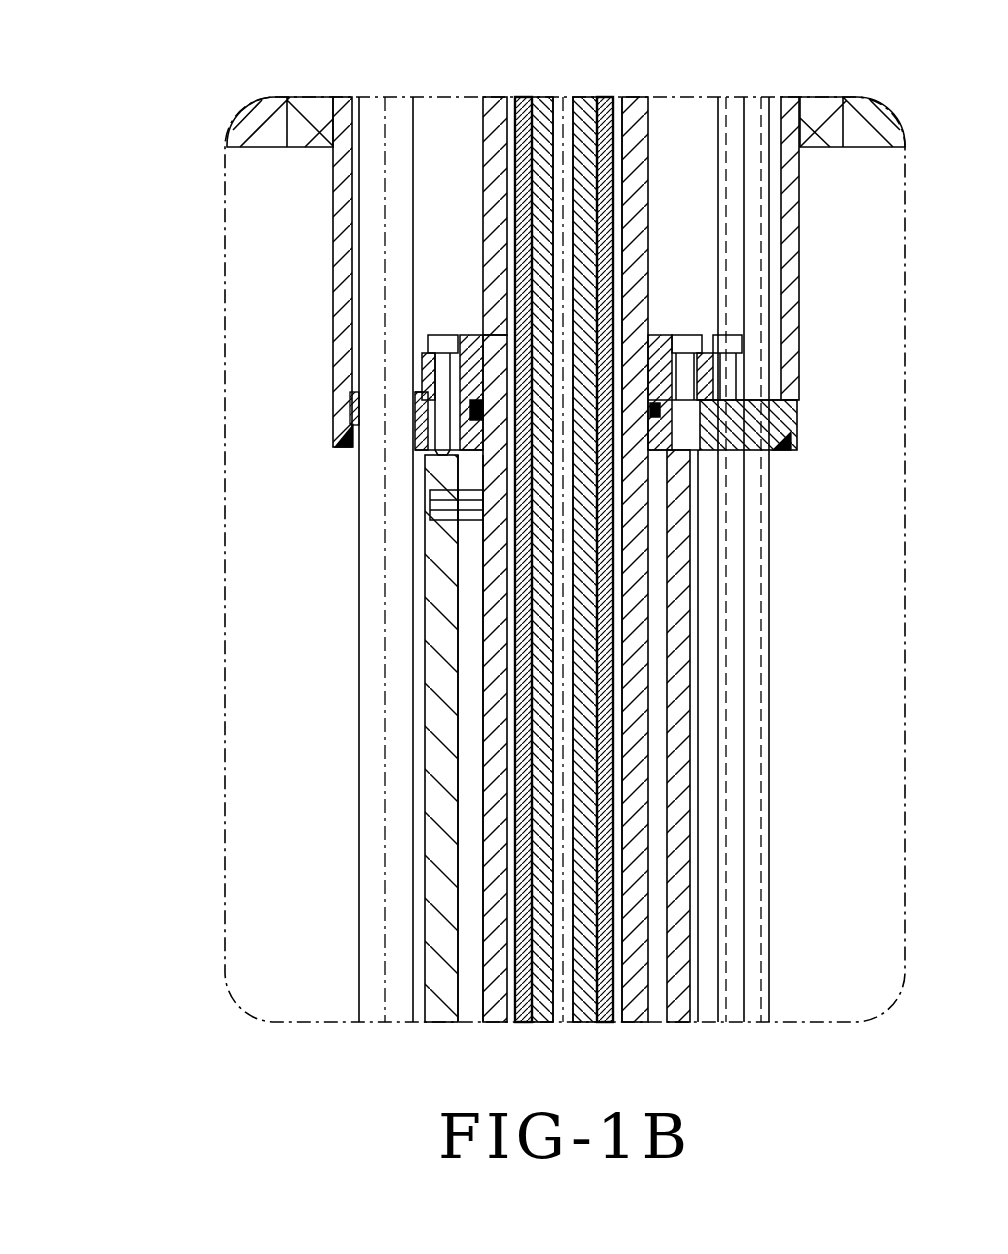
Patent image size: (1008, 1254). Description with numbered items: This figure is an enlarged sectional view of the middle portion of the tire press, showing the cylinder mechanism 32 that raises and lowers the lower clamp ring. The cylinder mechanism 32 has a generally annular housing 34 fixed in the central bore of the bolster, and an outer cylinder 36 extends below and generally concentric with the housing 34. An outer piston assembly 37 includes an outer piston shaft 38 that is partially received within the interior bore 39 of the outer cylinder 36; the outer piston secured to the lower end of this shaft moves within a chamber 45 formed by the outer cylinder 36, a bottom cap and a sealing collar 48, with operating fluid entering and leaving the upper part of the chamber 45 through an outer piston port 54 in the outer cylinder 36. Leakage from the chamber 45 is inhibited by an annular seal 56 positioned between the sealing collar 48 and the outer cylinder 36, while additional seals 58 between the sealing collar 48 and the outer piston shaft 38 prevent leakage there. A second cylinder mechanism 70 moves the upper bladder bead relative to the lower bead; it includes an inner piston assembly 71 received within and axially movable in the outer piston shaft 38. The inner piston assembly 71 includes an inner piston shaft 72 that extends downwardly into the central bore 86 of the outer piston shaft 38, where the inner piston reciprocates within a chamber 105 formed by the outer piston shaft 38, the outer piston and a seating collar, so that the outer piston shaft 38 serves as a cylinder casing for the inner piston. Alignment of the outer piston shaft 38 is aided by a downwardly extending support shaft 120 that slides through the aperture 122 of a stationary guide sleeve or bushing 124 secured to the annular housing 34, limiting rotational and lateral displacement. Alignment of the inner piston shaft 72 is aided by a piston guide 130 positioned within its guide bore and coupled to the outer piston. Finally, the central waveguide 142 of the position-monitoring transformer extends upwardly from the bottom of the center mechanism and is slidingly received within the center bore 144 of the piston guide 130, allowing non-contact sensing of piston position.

The cylinder mechanism 32 is at (200, 565).
The annular housing 34 is at (335, 300).
The outer cylinder 36 is at (440, 655).
The outer piston assembly 37 is at (470, 977).
The outer piston shaft 38 is at (495, 752).
The interior bore 39 is at (452, 872).
The chamber 45 is at (668, 760).
The sealing collar 48 is at (620, 381).
The outer piston port 54 is at (430, 502).
The annular seal 56 is at (688, 422).
The additional seals 58 is at (475, 355).
The second cylinder mechanism 70 is at (672, 217).
The inner piston assembly 71 is at (680, 358).
The inner piston shaft 72 is at (612, 190).
The central bore 86 is at (512, 150).
The chamber 105 is at (628, 290).
The support shaft 120 is at (375, 226).
The aperture 122 is at (362, 406).
The guide sleeve or bushing 124 is at (335, 434).
The piston guide 130 is at (582, 864).
The central waveguide 142 is at (566, 521).
The center bore 144 is at (568, 945).